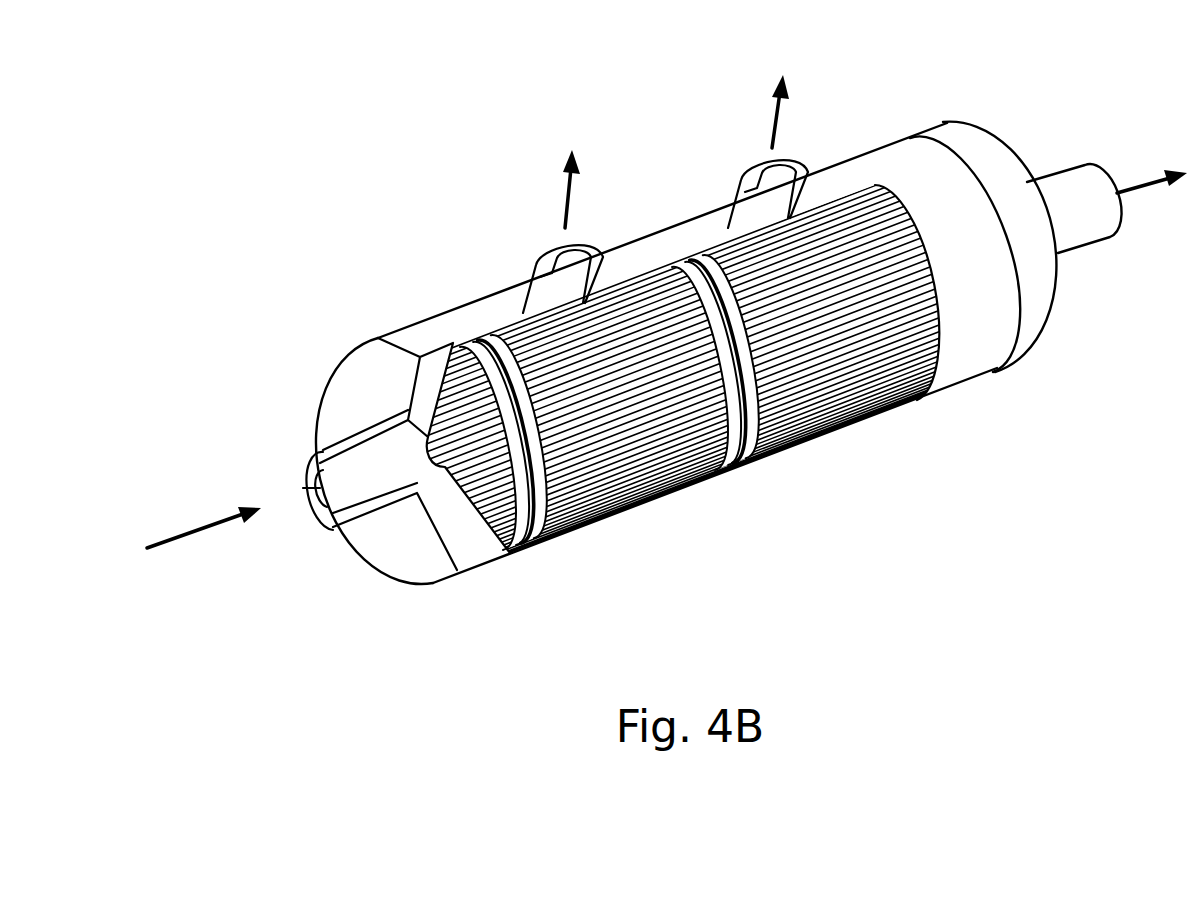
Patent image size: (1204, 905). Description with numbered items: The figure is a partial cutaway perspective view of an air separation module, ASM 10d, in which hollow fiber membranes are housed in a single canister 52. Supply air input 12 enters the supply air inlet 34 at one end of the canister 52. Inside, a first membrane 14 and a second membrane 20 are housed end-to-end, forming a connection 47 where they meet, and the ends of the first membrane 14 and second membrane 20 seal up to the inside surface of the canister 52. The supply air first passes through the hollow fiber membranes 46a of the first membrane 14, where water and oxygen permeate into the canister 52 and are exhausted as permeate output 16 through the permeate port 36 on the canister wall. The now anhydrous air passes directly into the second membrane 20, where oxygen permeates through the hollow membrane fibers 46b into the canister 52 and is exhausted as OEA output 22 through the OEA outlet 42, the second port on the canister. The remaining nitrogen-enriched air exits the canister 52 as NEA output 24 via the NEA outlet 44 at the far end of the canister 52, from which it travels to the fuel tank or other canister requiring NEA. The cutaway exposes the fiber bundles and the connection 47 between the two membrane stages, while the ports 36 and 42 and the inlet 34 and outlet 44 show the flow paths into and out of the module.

The ASM 10d is at (233, 119).
The supply air input 12 is at (188, 538).
The first membrane 14 is at (686, 491).
The permeate output 16 is at (570, 196).
The second membrane 20 is at (904, 410).
The OEA output 22 is at (785, 120).
The NEA output 24 is at (1147, 196).
The supply air inlet 34 is at (318, 488).
The permeate port 36 is at (525, 250).
The OEA outlet 42 is at (742, 178).
The NEA outlet 44 is at (1063, 160).
The hollow fiber membranes 46a is at (607, 413).
The hollow fiber membranes 46b is at (831, 322).
The connection 47 is at (723, 480).
The canister 52 is at (403, 303).